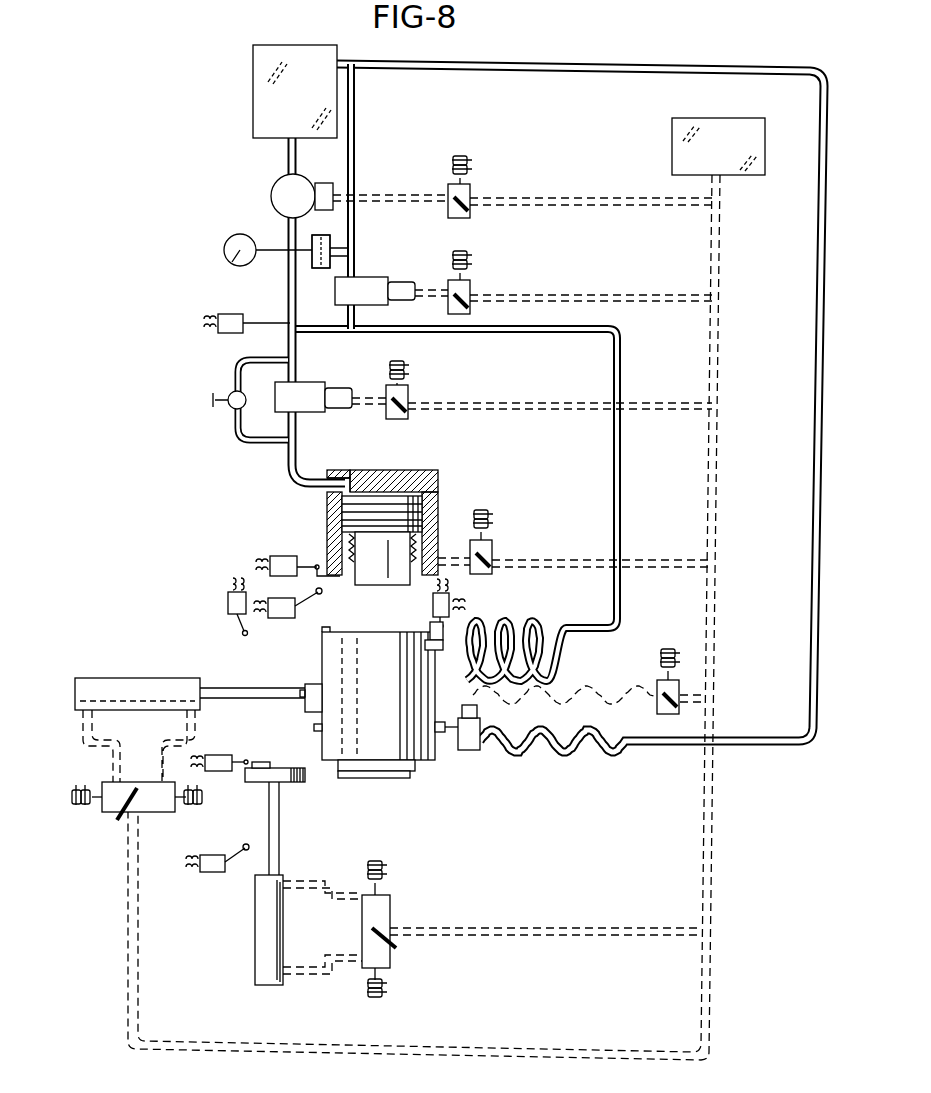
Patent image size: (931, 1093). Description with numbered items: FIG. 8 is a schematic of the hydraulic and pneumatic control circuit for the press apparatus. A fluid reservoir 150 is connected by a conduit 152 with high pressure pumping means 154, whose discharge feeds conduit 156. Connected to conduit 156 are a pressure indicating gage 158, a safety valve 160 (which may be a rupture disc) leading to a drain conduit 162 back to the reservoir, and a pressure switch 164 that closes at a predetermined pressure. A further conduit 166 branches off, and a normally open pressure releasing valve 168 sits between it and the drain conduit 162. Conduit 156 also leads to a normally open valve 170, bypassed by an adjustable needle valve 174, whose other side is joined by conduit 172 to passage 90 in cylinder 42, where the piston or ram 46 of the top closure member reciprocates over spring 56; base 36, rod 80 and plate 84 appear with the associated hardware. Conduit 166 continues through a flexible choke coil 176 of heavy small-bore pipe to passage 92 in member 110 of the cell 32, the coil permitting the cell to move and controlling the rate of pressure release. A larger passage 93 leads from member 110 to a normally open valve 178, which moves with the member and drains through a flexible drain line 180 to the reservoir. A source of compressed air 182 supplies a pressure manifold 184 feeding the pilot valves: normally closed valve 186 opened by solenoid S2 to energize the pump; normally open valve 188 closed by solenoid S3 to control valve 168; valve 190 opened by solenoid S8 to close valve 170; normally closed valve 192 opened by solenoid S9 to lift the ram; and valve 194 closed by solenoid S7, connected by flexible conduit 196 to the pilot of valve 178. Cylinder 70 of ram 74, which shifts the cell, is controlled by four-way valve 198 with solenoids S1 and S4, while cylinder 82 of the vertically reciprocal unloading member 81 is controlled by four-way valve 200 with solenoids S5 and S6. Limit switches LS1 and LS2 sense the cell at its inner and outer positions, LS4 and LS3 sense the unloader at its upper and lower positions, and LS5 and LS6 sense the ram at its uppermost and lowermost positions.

The fluid reservoir 150 is at (255, 94).
The conduit 152 is at (290, 159).
The high pressure pumping means 154 is at (271, 197).
The conduit 156 is at (287, 285).
The pressure indicating gage 158 is at (224, 251).
The safety valve 160 is at (326, 241).
The drain conduit 162 is at (332, 257).
The pressure switch 164 is at (226, 314).
The conduit 166 is at (453, 337).
The normally open pressure releasing valve 168 is at (360, 283).
The normally open valve 170 is at (302, 386).
The conduit 172 is at (295, 460).
The adjustable needle valve 174 is at (230, 408).
The flexible choke coil 176 is at (490, 622).
The normally open valve 178 is at (481, 749).
The flexible drain line 180 is at (585, 748).
The source of compressed air 182 is at (672, 137).
The pressure supply manifold 184 is at (710, 270).
The normally closed valve 186 is at (470, 201).
The normally open valve 188 is at (470, 296).
The valve 190 is at (416, 400).
The normally closed valve 192 is at (492, 556).
The valve 194 is at (680, 698).
The conduit 196 is at (596, 684).
The four-way valve 198 is at (112, 812).
The four-way valve 200 is at (388, 925).
The solenoid S1 is at (80, 788).
The solenoid S2 is at (462, 165).
The solenoid S3 is at (463, 264).
The solenoid S4 is at (206, 800).
The solenoid S5 is at (378, 869).
The solenoid S6 is at (377, 996).
The solenoid S7 is at (667, 650).
The solenoid S8 is at (412, 371).
The solenoid S9 is at (485, 516).
The limit switch LS1 is at (433, 612).
The limit switch LS2 is at (228, 604).
The limit switch LS3 is at (220, 872).
The limit switch LS4 is at (216, 755).
The limit switch LS5 is at (278, 556).
The limit switch LS6 is at (286, 618).
The cylinder 42 is at (405, 470).
The piston or ram 46 is at (428, 506).
The spring 56 is at (345, 546).
The passage 90 is at (337, 490).
The passage 92 is at (428, 636).
The passage 93 is at (436, 767).
The member 110 is at (328, 661).
The cylinder 70 is at (148, 678).
The ram 74 is at (246, 680).
The cell 32 is at (314, 727).
The base plate 36 is at (378, 782).
The rod 80 is at (280, 843).
The unloading member 81 is at (305, 783).
The cylinder 82 is at (262, 951).
The plate 84 is at (278, 768).